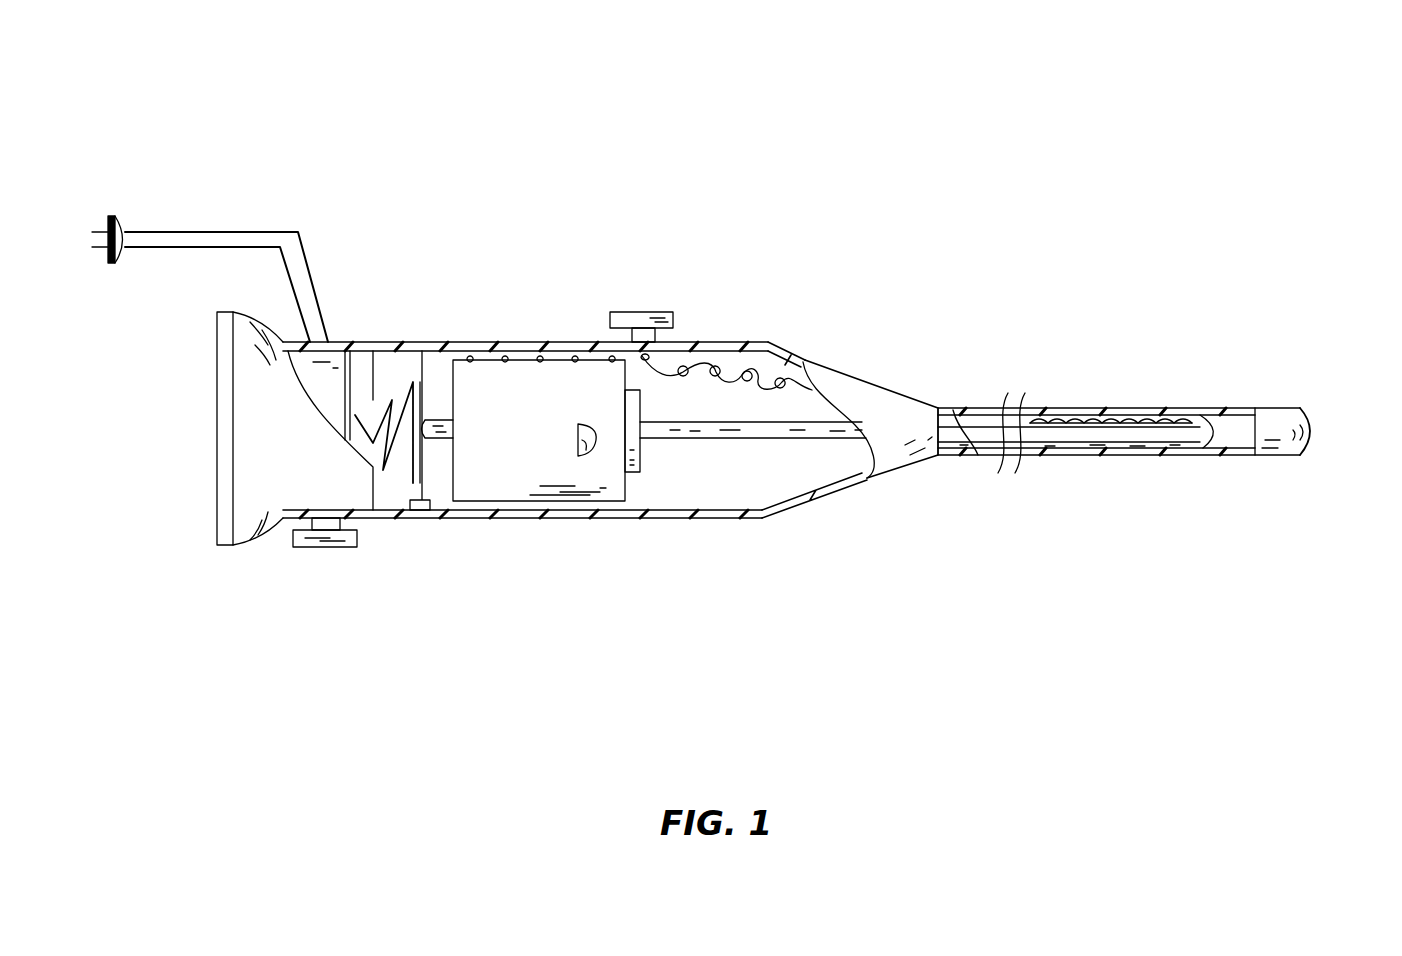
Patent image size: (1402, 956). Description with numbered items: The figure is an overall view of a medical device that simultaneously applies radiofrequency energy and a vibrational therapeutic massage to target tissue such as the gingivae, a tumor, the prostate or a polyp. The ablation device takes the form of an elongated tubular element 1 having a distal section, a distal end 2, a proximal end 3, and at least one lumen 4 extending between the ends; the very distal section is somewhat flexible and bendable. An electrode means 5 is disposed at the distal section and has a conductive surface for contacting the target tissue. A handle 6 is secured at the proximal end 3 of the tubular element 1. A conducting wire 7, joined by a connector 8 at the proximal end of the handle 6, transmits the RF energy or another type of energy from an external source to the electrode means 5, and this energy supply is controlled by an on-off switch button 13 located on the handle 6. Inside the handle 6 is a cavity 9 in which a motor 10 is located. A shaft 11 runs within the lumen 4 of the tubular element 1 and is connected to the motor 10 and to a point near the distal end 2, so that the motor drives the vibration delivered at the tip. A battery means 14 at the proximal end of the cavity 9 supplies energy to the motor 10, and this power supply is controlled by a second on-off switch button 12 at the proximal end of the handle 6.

The elongated tubular element 1 is at (1063, 400).
The distal end 2 is at (1303, 407).
The proximal end 3 is at (942, 400).
The lumen 4 is at (1077, 445).
The electrode means 5 is at (1280, 462).
The handle 6 is at (698, 342).
The conducting wire 7 is at (733, 360).
The connector 8 is at (123, 215).
The cavity 9 is at (717, 485).
The motor 10 is at (492, 385).
The shaft 11 is at (780, 432).
The on-off switch button 12 is at (312, 555).
The on-off switch button 13 is at (633, 307).
The battery means 14 is at (322, 380).